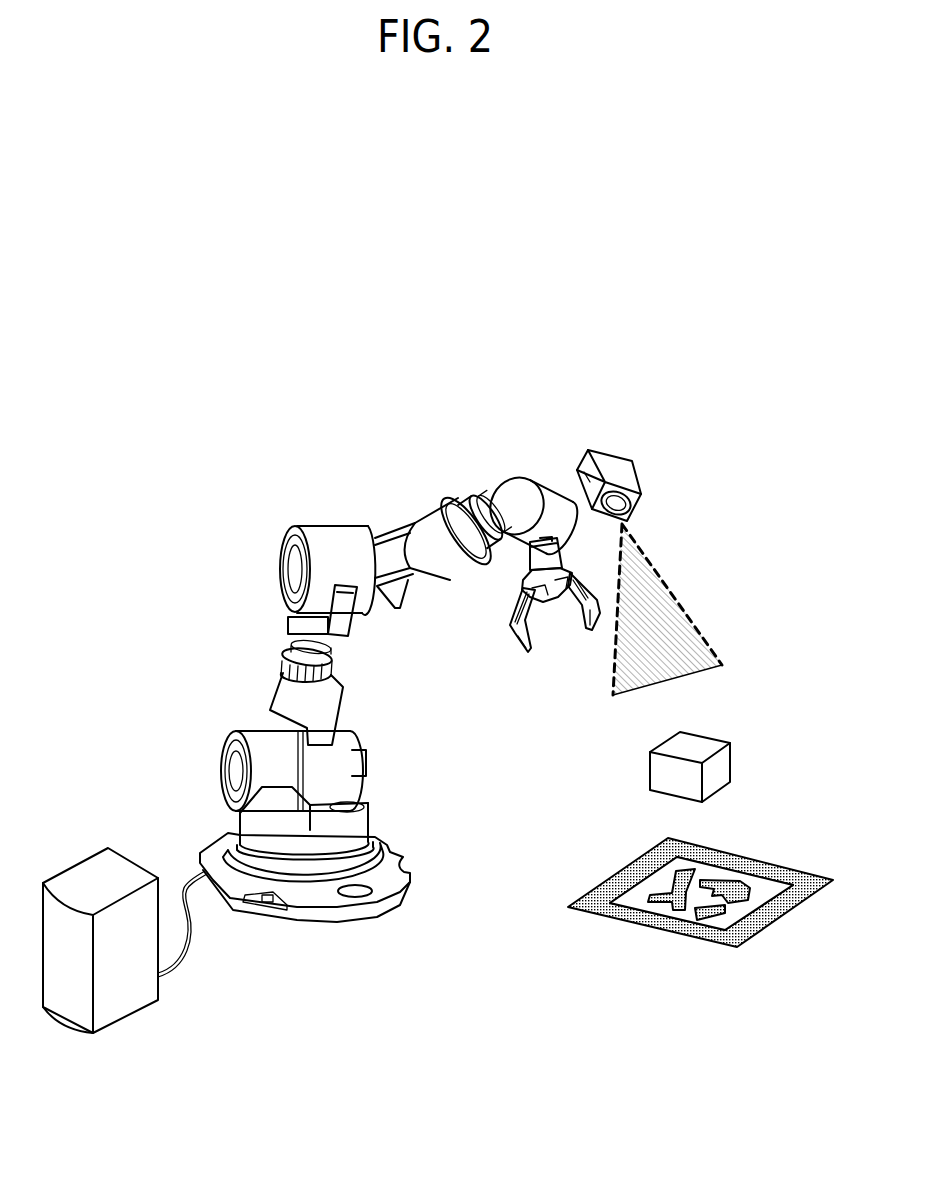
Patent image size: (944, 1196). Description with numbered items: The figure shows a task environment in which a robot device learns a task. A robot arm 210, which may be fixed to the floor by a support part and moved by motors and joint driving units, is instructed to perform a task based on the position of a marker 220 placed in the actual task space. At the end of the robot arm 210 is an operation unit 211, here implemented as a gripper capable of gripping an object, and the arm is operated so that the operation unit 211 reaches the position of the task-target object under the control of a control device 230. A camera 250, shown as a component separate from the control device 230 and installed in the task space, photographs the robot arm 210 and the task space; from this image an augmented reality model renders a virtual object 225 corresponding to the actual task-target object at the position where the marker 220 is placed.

The robot arm 210 is at (400, 695).
The operation unit 211 is at (512, 633).
The marker 220 is at (795, 868).
The virtual object 225 is at (723, 762).
The control device 230 is at (117, 850).
The camera 250 is at (615, 470).